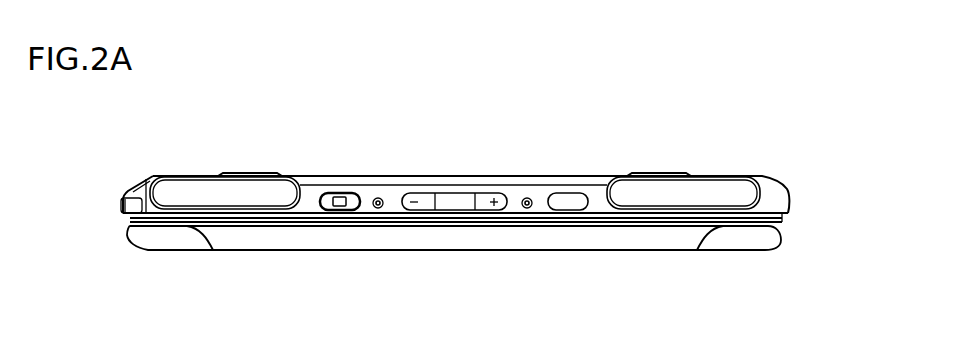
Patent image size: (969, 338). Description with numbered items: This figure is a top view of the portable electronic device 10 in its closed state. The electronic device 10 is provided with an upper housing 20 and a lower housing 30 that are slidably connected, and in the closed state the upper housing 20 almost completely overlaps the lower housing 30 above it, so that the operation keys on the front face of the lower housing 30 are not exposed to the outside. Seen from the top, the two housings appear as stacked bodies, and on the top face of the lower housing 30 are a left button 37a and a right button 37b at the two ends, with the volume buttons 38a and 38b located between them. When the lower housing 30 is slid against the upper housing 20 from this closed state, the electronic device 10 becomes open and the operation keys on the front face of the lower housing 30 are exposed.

The portable electronic device 10 is at (467, 305).
The upper housing 20 is at (768, 240).
The lower housing 30 is at (768, 186).
The left button 37a is at (188, 188).
The right button 37b is at (722, 188).
The volume button 38a is at (423, 190).
The volume button 38b is at (485, 190).